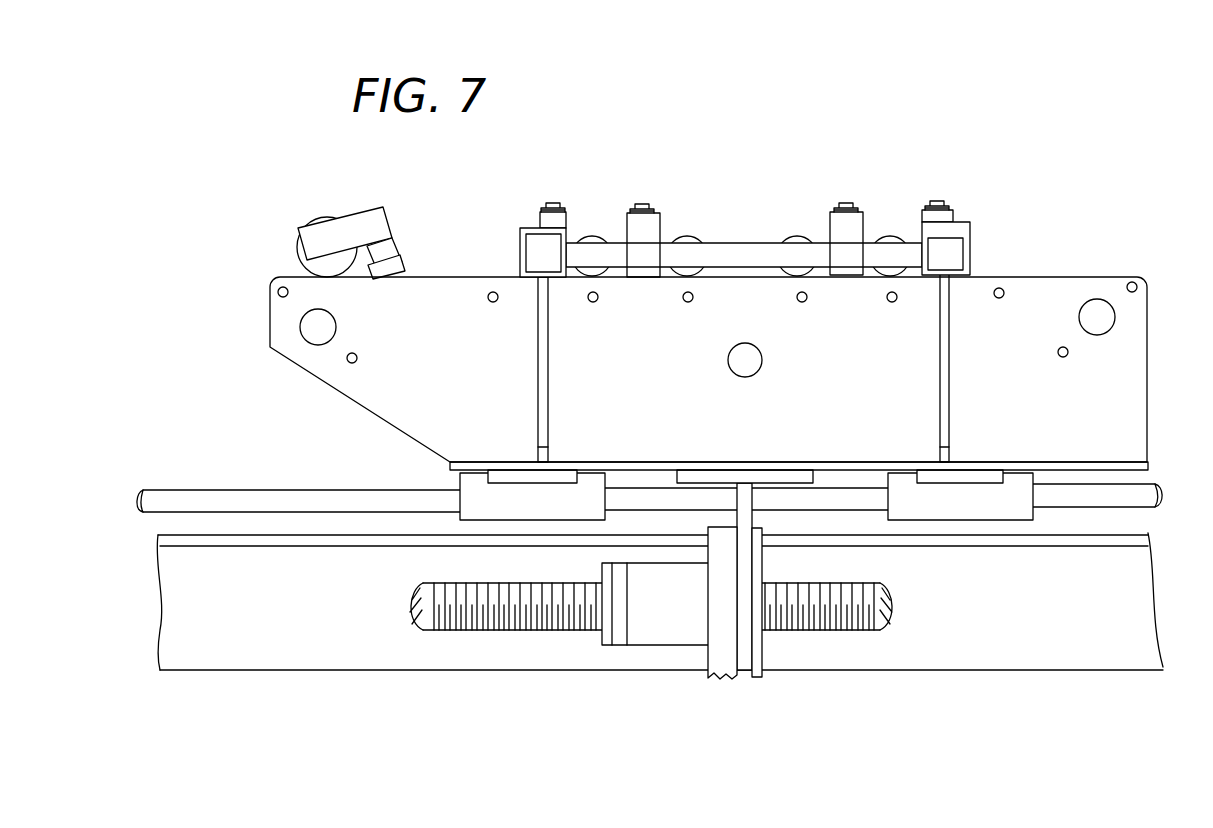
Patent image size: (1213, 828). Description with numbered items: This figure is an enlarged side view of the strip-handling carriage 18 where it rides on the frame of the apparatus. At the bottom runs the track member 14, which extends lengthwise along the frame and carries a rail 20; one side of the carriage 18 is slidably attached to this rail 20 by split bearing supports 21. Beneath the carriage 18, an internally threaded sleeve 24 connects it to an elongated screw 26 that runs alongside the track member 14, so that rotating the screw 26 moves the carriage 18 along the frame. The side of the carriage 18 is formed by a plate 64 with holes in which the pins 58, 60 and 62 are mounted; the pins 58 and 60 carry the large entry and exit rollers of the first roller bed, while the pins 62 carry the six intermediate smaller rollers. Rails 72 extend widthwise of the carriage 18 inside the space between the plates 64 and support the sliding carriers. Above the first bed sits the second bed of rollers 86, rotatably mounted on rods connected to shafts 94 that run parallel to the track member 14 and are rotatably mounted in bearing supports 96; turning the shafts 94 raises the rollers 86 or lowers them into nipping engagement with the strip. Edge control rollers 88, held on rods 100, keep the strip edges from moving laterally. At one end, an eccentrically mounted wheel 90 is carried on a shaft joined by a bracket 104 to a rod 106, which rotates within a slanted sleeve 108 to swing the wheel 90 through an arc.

The track member 14 is at (847, 663).
The carriage 18 is at (973, 218).
The rail 20 is at (1152, 485).
The split bearing supports 21 is at (463, 482).
The internally threaded sleeve 24 is at (658, 633).
The elongated screw 26 is at (515, 630).
The pin 58 is at (310, 328).
The pin 60 is at (1110, 317).
The pins 62 is at (493, 292).
The plates 64 is at (1100, 280).
The rails 72 is at (538, 383).
The rollers 86 is at (592, 238).
The edge control rollers 88 is at (536, 218).
The eccentrically mounted wheels 90 is at (302, 250).
The shafts 94 is at (713, 253).
The bearing supports 96 is at (537, 220).
The rods 100 is at (600, 165).
The brackets 104 is at (355, 220).
The rods 106 is at (384, 253).
The sleeves 108 is at (396, 272).